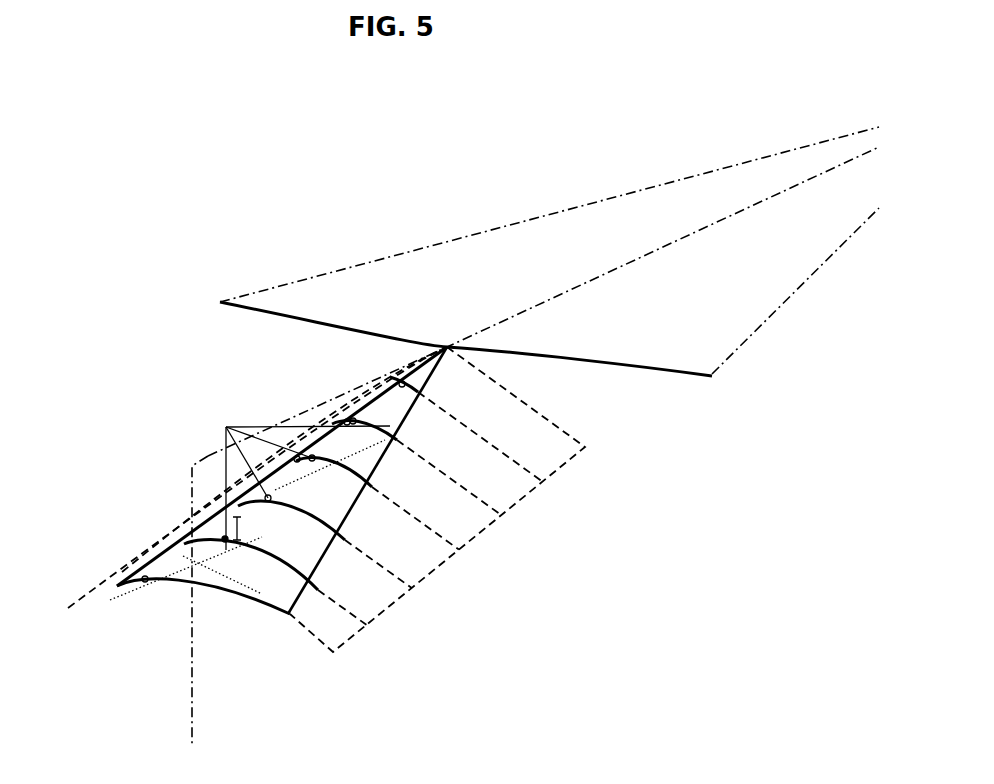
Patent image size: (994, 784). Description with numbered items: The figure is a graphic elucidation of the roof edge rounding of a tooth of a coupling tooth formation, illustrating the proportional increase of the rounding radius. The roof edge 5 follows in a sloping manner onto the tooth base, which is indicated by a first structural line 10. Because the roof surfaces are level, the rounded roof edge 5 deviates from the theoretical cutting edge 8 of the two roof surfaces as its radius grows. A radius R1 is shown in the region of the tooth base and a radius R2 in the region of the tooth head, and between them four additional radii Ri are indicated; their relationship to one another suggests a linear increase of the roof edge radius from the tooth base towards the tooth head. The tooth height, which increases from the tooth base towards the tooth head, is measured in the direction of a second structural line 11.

The roof edge 5 is at (226, 556).
The theoretical cutting edge 8 is at (214, 527).
The first structural line 10 is at (250, 309).
The second structural line 11 is at (205, 456).
The radius R1 is at (400, 382).
The radius R2 is at (142, 578).
The additional radii Ri is at (295, 485).